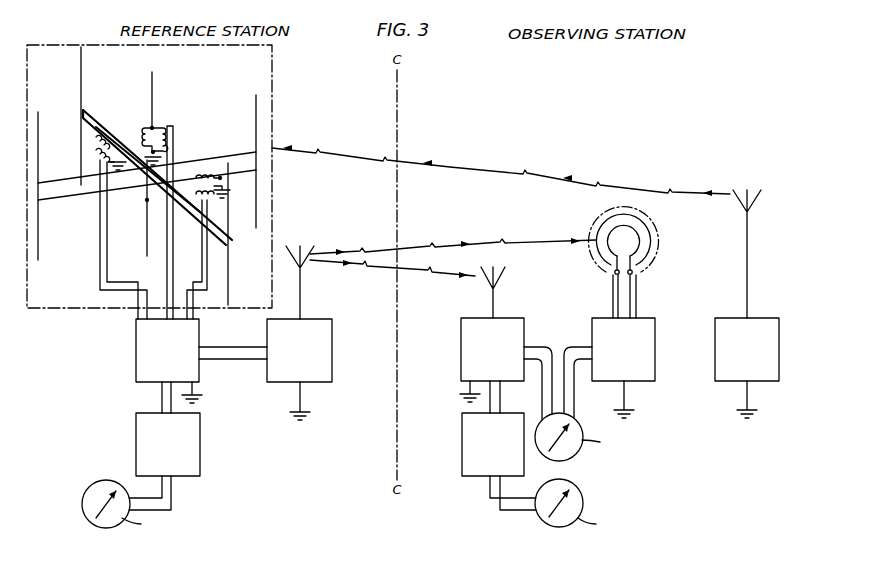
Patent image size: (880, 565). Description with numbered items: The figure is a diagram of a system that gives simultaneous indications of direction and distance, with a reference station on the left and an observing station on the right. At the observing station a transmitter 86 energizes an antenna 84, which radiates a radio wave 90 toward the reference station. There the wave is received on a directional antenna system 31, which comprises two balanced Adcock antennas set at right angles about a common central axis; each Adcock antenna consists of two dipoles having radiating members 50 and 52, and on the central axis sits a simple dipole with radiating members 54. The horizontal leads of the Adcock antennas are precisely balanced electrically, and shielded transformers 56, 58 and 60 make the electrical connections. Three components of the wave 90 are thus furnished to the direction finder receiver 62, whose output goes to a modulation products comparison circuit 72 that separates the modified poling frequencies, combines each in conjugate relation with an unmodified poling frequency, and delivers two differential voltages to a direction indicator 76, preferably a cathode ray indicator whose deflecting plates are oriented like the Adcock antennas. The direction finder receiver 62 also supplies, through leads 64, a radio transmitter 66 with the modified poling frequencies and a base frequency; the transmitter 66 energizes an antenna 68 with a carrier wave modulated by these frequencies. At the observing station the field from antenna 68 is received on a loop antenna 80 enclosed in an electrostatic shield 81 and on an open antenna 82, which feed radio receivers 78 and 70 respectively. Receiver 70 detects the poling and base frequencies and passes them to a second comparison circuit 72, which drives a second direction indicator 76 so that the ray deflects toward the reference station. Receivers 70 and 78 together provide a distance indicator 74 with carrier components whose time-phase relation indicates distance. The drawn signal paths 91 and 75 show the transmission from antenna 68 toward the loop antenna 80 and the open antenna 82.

The directional antenna system 31 is at (272, 95).
The radiating members 50 is at (74, 110).
The radiating members 52 is at (41, 207).
The radiating members 54 is at (155, 108).
The shielded transformer 56 is at (151, 129).
The shielded transformer 58 is at (95, 147).
The shielded transformer 60 is at (221, 203).
The direction finder receiver 62 is at (199, 336).
The leads 64 is at (241, 353).
The radio transmitter 66 is at (332, 335).
The antenna 68 is at (296, 252).
The radio receiver 70 is at (524, 333).
The modulation products comparison circuit 72 is at (136, 428).
The distance indicator 74 is at (573, 423).
The radio signal path 75 is at (407, 268).
The direction indicator 76 is at (111, 484).
The radio receiver 78 is at (655, 340).
The loop antenna 80 is at (637, 248).
The electrostatic shield 81 is at (659, 231).
The open antenna 82 is at (505, 270).
The antenna 84 is at (753, 204).
The transmitter 86 is at (715, 333).
The radio wave 90 is at (518, 172).
The radio signal path 91 is at (431, 240).